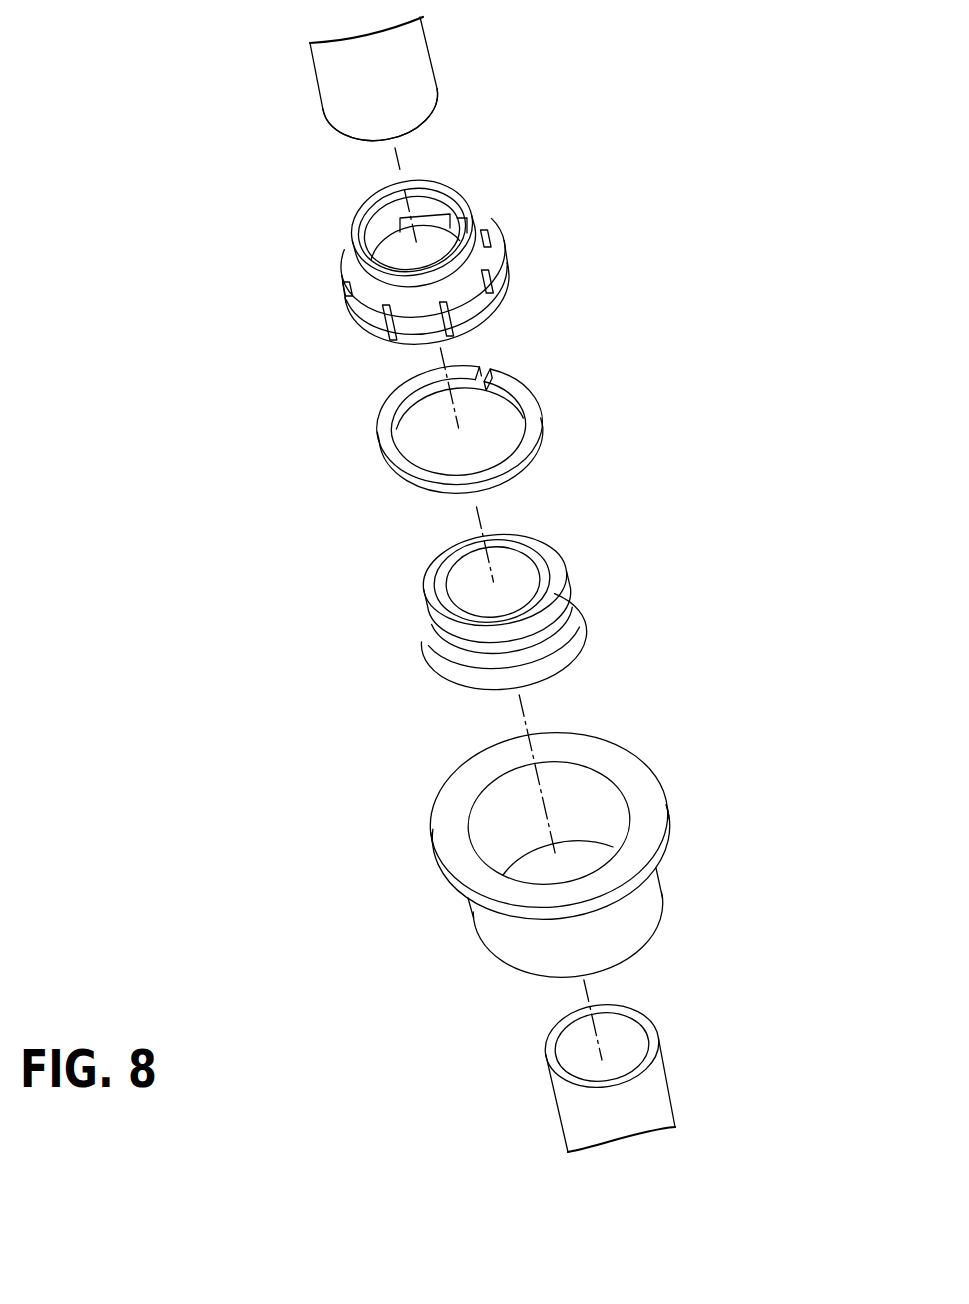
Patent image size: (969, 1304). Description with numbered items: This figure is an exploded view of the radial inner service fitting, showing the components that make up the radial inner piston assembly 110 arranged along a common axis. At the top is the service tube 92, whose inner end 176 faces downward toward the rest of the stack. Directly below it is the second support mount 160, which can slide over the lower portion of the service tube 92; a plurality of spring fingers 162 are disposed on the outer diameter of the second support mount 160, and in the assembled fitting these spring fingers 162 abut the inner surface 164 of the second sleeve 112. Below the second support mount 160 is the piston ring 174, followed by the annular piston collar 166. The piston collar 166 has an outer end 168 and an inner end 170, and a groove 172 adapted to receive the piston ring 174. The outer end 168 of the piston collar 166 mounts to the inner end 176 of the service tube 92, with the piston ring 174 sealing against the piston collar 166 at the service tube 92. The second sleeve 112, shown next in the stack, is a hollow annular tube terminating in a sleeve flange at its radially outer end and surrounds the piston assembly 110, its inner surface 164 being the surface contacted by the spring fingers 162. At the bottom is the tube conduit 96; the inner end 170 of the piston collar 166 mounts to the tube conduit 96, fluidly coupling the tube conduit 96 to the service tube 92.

The service tube 92 is at (335, 73).
The tube conduit 96 is at (588, 1112).
The radial inner piston assembly 110 is at (237, 545).
The second sleeve 112 is at (502, 930).
The second support mount 160 is at (420, 280).
The spring fingers 162 is at (417, 327).
The inner surface 164 is at (600, 805).
The annular piston collar 166 is at (500, 623).
The outer end 168 is at (448, 573).
The inner end 170 is at (527, 683).
The groove 172 is at (555, 628).
The piston ring 174 is at (522, 393).
The inner end 176 is at (428, 117).